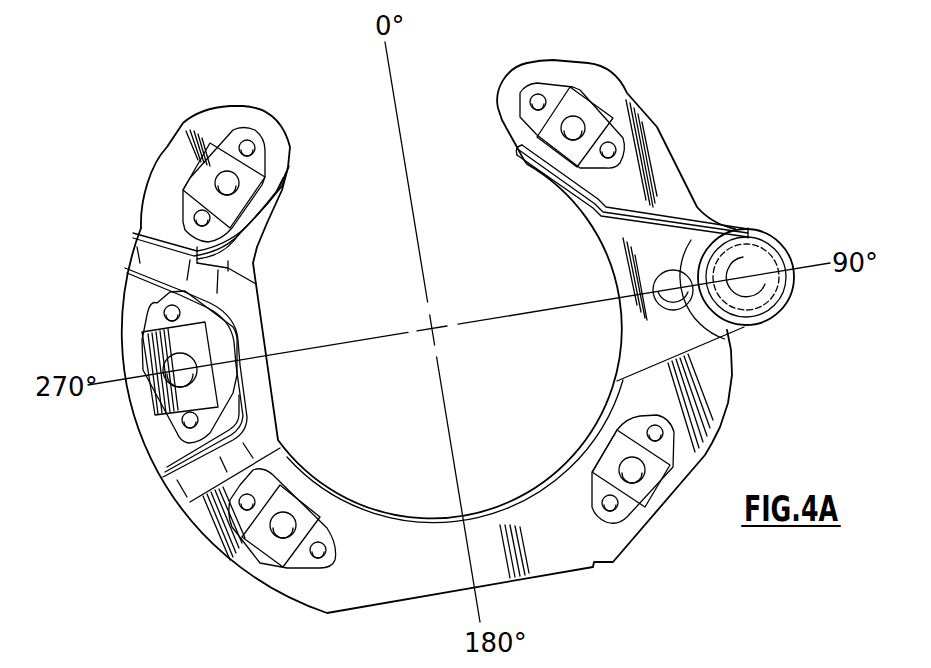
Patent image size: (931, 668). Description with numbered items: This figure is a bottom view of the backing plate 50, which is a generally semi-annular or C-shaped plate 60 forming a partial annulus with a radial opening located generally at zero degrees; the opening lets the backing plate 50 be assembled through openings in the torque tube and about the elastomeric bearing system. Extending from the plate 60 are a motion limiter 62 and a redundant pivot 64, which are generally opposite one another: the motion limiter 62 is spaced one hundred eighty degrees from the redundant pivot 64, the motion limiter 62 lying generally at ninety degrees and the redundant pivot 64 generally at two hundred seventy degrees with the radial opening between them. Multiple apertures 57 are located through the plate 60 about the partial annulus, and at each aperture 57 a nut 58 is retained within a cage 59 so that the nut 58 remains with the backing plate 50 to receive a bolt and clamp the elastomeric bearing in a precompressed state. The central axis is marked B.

The backing plate 50 is at (746, 131).
The aperture 57 is at (572, 138).
The nut 58 is at (598, 108).
The cage 59 is at (614, 133).
The plate 60 is at (680, 197).
The motion limiter 62 is at (297, 343).
The redundant pivot 64 is at (768, 310).
The center axis B is at (438, 331).